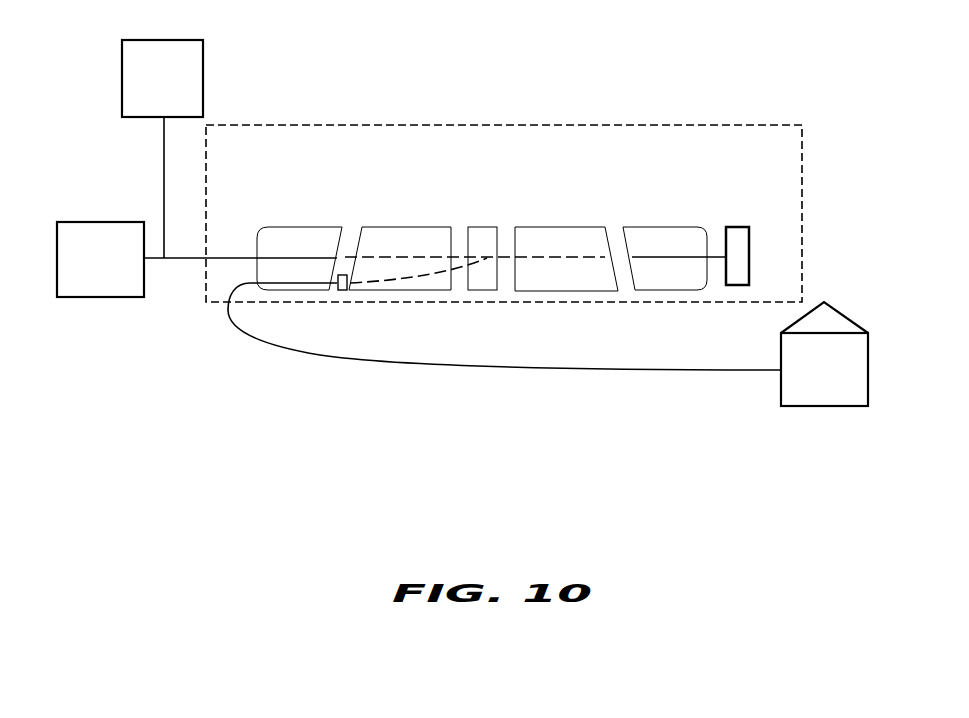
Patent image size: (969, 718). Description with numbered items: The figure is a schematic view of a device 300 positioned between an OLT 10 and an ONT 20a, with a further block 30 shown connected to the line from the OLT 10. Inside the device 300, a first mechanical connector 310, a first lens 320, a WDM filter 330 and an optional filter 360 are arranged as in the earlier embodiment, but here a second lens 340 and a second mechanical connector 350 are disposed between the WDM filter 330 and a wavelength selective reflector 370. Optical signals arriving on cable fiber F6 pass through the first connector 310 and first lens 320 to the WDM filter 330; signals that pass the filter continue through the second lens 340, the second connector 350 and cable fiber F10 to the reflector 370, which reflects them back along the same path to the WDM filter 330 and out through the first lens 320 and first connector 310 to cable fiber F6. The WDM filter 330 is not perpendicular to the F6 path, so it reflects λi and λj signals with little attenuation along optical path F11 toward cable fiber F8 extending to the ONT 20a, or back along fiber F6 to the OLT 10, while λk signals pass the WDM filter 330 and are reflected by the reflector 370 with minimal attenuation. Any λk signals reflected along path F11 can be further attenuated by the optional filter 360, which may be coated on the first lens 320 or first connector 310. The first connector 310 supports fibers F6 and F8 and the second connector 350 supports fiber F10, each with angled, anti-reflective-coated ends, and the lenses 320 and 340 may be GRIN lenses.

The OLT 10 is at (117, 281).
The controller / processor 30 is at (178, 97).
The ONT 20a is at (800, 386).
The device 300 is at (343, 91).
The first mechanical connector 310 is at (303, 240).
The first lens 320 is at (402, 242).
The WDM filter 330 is at (483, 242).
The second lens 340 is at (580, 243).
The second mechanical connector 350 is at (688, 243).
The optional filter 360 is at (341, 277).
The wavelength selective reflector 370 is at (742, 237).
The cable fiber F6 is at (193, 262).
The cable fiber F8 is at (255, 342).
The cable fiber F10 is at (698, 255).
The optical path F11 is at (408, 280).